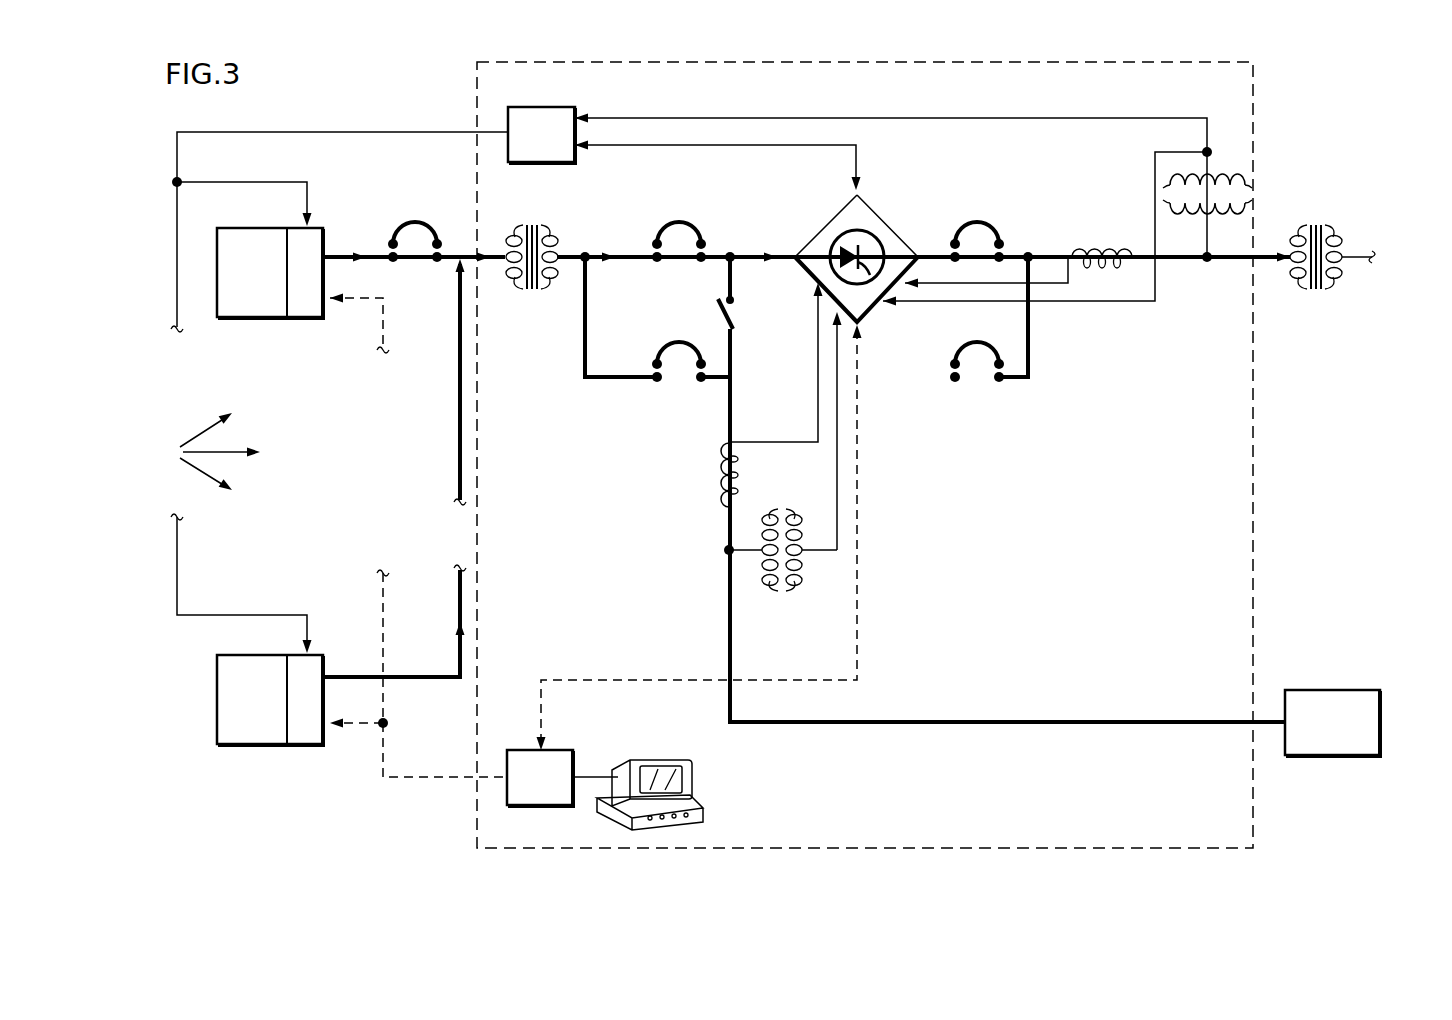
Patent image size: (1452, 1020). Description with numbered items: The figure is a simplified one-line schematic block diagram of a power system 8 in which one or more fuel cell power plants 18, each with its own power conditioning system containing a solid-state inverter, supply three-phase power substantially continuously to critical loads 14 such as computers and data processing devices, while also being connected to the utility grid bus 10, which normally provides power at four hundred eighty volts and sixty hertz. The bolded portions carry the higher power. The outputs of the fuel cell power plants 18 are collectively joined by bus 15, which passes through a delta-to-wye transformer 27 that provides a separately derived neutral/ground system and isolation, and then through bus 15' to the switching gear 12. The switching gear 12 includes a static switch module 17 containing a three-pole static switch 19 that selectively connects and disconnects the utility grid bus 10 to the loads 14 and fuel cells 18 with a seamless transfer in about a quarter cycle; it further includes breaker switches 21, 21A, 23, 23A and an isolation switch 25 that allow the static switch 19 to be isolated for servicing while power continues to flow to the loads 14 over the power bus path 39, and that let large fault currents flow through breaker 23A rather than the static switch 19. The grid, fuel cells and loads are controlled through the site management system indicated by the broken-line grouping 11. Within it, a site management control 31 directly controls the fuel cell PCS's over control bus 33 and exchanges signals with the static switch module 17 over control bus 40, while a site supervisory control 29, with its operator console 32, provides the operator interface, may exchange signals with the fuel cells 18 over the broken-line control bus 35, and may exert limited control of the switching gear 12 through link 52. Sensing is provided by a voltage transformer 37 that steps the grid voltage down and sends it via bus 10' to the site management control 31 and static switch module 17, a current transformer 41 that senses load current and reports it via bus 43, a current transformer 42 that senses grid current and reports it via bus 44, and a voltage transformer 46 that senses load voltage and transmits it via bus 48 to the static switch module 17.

The power system 8 is at (210, 451).
The utility grid bus 10 is at (1353, 247).
The grid voltage reference signal bus 10' is at (893, 210).
The site management system 11 is at (466, 96).
The switching gear 12 is at (586, 403).
The critical loads 14 is at (1337, 690).
The bus 15 is at (422, 224).
The bus 15' is at (612, 282).
The static switch module 17 is at (812, 212).
The fuel cell power plant 18 is at (265, 228).
The static switch 19 is at (842, 246).
The breaker switch 21 is at (678, 222).
The breaker switch 21A is at (678, 344).
The breaker switch 23 is at (980, 224).
The breaker switch 23A is at (978, 344).
The isolation switch 25 is at (733, 307).
The delta-to-wye transformer 27 is at (537, 213).
The site supervisory control 29 is at (562, 750).
The site management control 31 is at (552, 107).
The operator console 32 is at (655, 758).
The control bus 33 is at (298, 132).
The control bus 35 is at (383, 752).
The voltage transformer 37 is at (1222, 175).
The power bus path 39 is at (734, 355).
The control bus 40 is at (718, 146).
The current transformer 41 is at (715, 460).
The current transformer 42 is at (1099, 251).
The bus 43 is at (760, 442).
The bus 44 is at (995, 283).
The voltage transformer 46 is at (783, 595).
The bus 48 is at (837, 497).
The link 52 is at (860, 597).